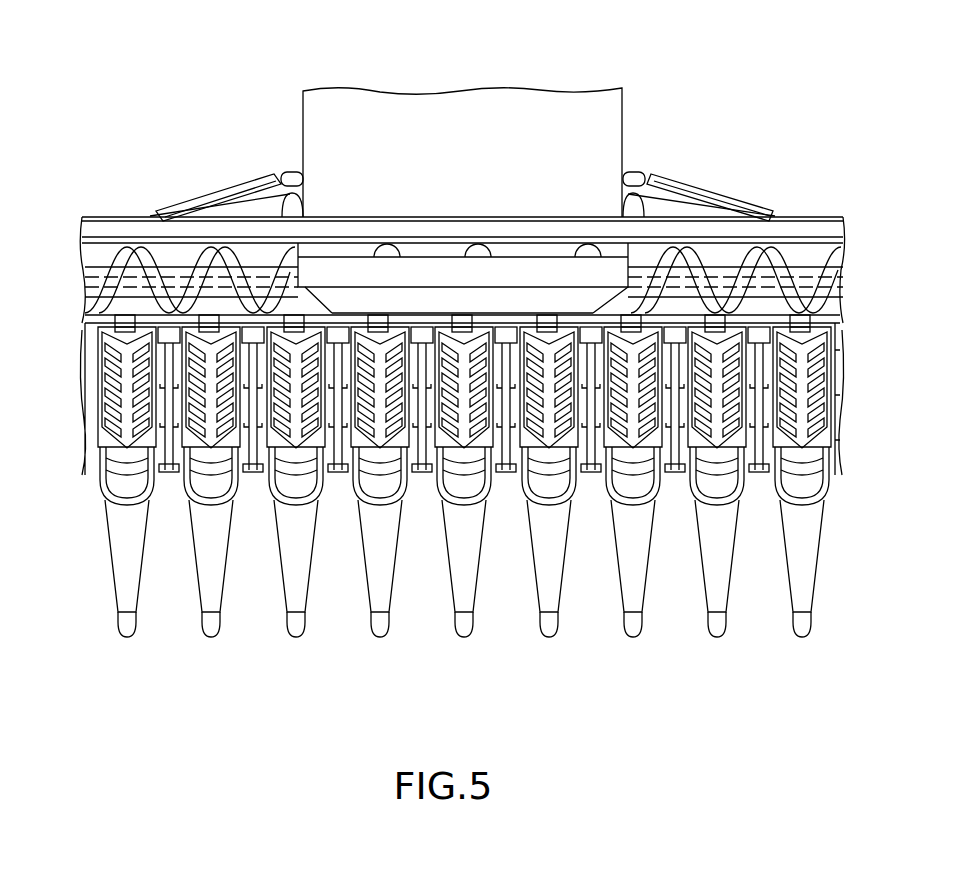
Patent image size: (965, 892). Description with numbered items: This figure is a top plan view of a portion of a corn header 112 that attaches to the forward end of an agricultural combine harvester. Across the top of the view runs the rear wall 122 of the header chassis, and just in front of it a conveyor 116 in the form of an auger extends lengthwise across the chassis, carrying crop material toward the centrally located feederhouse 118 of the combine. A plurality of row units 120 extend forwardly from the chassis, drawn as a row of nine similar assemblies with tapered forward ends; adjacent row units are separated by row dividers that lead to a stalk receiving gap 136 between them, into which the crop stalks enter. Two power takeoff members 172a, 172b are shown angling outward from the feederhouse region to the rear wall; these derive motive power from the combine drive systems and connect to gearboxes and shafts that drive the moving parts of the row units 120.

The header 112 is at (880, 102).
The conveyor 116 is at (198, 250).
The feederhouse 118 is at (442, 160).
The row units 120 is at (760, 596).
The rear wall 122 is at (785, 216).
The stalk receiving gap 136 is at (168, 486).
The power takeoff member 172a is at (678, 178).
The power takeoff member 172b is at (247, 180).